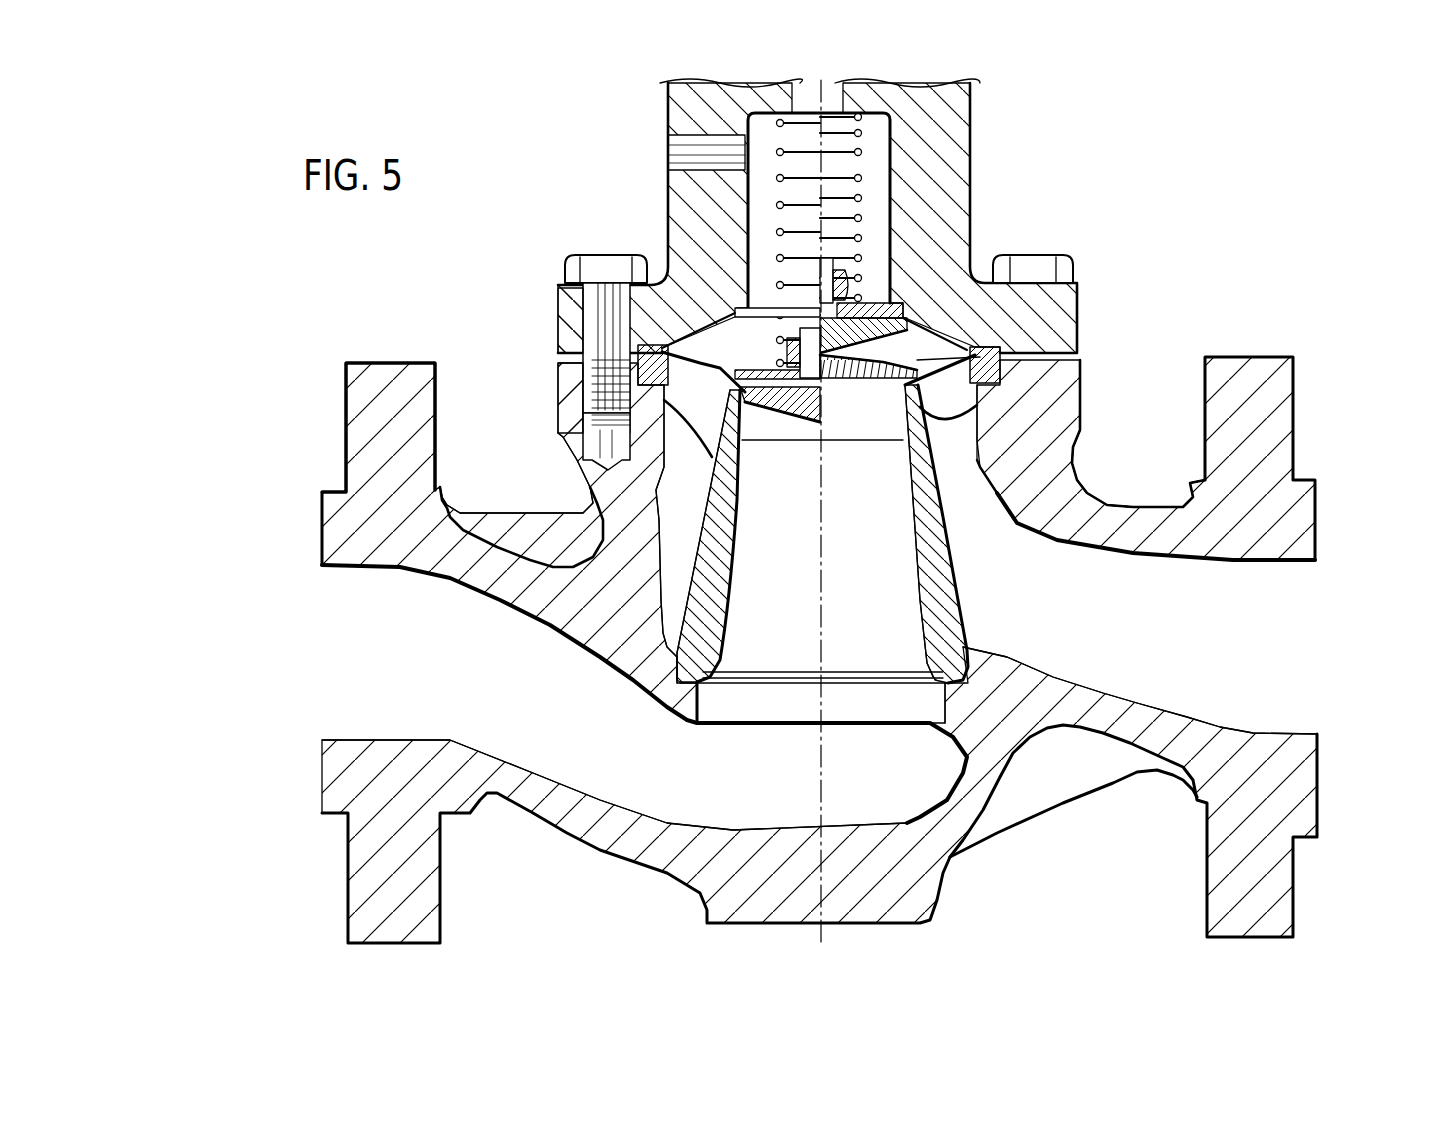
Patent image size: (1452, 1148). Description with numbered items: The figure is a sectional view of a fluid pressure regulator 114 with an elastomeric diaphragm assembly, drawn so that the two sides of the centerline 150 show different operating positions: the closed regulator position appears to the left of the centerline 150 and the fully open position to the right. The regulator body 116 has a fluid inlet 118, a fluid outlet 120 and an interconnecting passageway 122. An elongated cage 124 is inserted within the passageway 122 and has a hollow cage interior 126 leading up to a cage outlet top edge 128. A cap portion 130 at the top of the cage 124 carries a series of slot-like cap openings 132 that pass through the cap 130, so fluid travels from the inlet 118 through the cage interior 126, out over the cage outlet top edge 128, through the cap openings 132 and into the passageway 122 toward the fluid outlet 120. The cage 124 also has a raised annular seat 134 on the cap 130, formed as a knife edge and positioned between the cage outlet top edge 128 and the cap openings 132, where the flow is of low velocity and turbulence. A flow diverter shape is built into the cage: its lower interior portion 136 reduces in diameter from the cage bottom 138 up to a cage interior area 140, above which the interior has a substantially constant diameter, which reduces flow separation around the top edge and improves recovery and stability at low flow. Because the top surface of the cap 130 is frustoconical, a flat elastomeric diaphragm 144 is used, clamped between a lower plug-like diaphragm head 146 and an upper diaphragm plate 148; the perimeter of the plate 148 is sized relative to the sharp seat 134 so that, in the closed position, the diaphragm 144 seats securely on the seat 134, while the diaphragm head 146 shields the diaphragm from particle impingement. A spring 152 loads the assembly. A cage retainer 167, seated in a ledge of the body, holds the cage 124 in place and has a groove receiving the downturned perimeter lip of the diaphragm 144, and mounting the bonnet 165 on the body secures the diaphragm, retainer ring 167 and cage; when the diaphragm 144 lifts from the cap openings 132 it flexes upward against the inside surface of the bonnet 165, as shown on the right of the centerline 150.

The regulator 114 is at (447, 283).
The regulator body 116 is at (417, 412).
The fluid inlet 118 is at (372, 643).
The fluid outlet 120 is at (1284, 657).
The interconnecting passageway 122 is at (682, 492).
The cage 124 is at (720, 560).
The cage interior 126 is at (763, 533).
The cage outlet top edge 128 is at (870, 385).
The cap portion 130 is at (912, 362).
The cap openings 132 is at (905, 362).
The raised annular seat 134 is at (870, 392).
The cage interior lower portion 136 is at (920, 547).
The cage bottom 138 is at (720, 678).
The cage interior area 140 is at (745, 440).
The flat elastomeric diaphragm element 144 is at (693, 328).
The plug-like diaphragm head 146 is at (788, 388).
The upper diaphragm plate 148 is at (763, 378).
The centerline 150 is at (822, 643).
The spring 152 is at (852, 155).
The bonnet 165 is at (1072, 303).
The cage retainer 167 is at (647, 377).